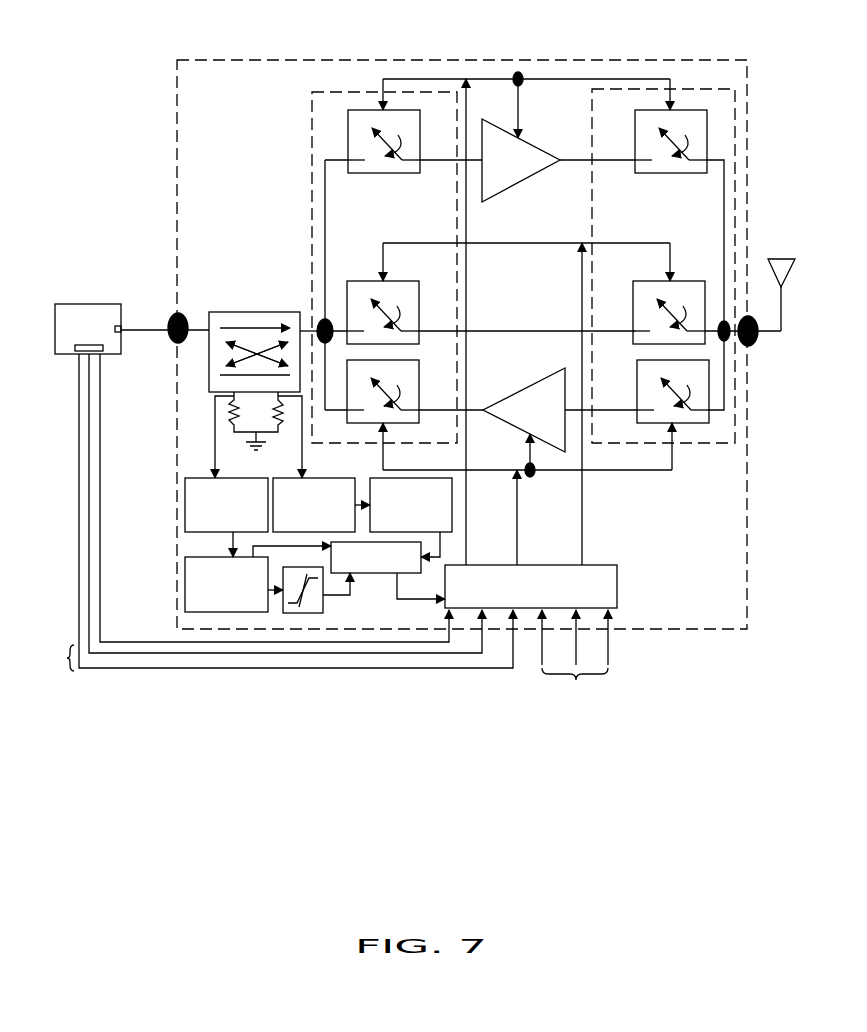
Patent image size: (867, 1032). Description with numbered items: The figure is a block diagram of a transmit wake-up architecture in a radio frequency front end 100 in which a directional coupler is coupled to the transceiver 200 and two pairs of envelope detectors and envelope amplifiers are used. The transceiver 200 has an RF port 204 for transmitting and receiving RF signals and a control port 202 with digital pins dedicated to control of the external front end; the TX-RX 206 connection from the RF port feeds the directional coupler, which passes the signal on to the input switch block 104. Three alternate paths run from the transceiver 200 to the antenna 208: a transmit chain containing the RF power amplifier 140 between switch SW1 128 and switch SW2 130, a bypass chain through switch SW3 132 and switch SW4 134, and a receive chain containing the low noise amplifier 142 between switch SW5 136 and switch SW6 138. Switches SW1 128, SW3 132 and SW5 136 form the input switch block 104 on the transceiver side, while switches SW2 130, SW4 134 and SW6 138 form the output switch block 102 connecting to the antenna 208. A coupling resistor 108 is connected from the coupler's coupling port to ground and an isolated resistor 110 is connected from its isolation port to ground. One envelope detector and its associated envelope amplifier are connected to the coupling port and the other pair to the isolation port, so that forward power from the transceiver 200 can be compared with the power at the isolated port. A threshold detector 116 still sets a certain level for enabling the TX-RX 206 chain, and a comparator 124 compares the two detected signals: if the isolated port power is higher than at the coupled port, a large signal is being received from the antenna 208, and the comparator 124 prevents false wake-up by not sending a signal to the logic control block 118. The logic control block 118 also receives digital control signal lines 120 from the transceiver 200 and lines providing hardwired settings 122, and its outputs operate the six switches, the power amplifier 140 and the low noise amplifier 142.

The radio frequency front end 100 is at (218, 60).
The output switch block 102 is at (618, 89).
The input switch block 104 is at (330, 92).
The coupling resistor 108 is at (232, 404).
The isolated resistor 110 is at (280, 406).
The threshold detector 116 is at (307, 613).
The logic control block 118 is at (617, 590).
The digital control signal lines 120 is at (67, 658).
The hardwired settings lines 122 is at (576, 680).
The comparator 124 is at (378, 573).
The switch SW1 128 is at (383, 173).
The switch SW2 130 is at (670, 173).
The switch SW3 132 is at (365, 281).
The switch SW4 134 is at (690, 281).
The switch SW5 136 is at (417, 362).
The switch SW6 138 is at (640, 362).
The RF power amplifier 140 is at (528, 171).
The low noise amplifier 142 is at (550, 421).
The transceiver 200 is at (121, 304).
The control port 202 is at (100, 357).
The RF port 204 is at (115, 326).
The TX-RX chain 206 is at (175, 318).
The antenna 208 is at (785, 340).